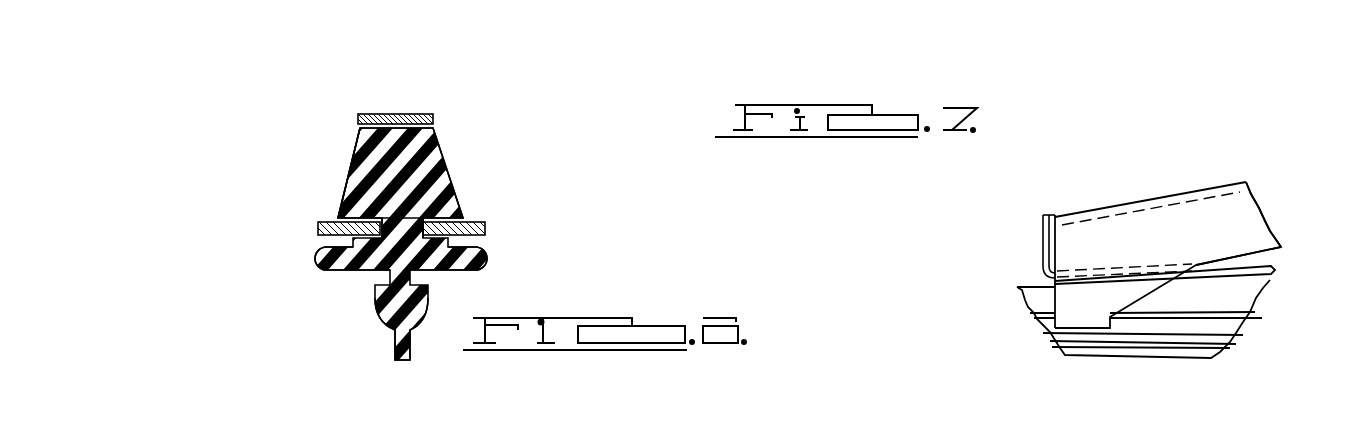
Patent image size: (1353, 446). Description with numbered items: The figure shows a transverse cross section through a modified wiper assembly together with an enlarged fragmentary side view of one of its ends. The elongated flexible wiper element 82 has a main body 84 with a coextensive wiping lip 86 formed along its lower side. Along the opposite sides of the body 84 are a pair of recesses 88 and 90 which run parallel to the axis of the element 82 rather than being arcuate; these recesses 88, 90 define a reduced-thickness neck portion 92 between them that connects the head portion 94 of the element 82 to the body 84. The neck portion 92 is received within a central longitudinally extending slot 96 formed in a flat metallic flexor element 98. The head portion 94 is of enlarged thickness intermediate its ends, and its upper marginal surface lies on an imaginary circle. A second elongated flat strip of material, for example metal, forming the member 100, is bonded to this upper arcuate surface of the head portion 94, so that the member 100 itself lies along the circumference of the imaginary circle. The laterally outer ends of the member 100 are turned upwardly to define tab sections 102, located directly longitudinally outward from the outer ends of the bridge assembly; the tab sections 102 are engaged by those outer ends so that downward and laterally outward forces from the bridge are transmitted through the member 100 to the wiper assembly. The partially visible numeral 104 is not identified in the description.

In FIG. 6, the elongated flexible wiper element 82 is at (460, 175).
In FIG. 6, the main body 84 is at (346, 206).
In FIG. 6, the wiping lip 86 is at (395, 328).
In FIG. 6, the recess 88 is at (466, 222).
In FIG. 6, the recess 90 is at (356, 239).
In FIG. 6, the neck portion 92 is at (400, 236).
In FIG. 6, the head portion 94 is at (427, 143).
In FIG. 6, the central longitudinally extending slot 96 is at (453, 270).
In FIG. 6, the flat metallic flexor element 98 is at (318, 228).
In FIG. 6, the strip member 100 is at (372, 113).
In FIG. 7, the tab sections 102 is at (1043, 237).
In FIG. 7, the panel 104 is at (1274, 256).